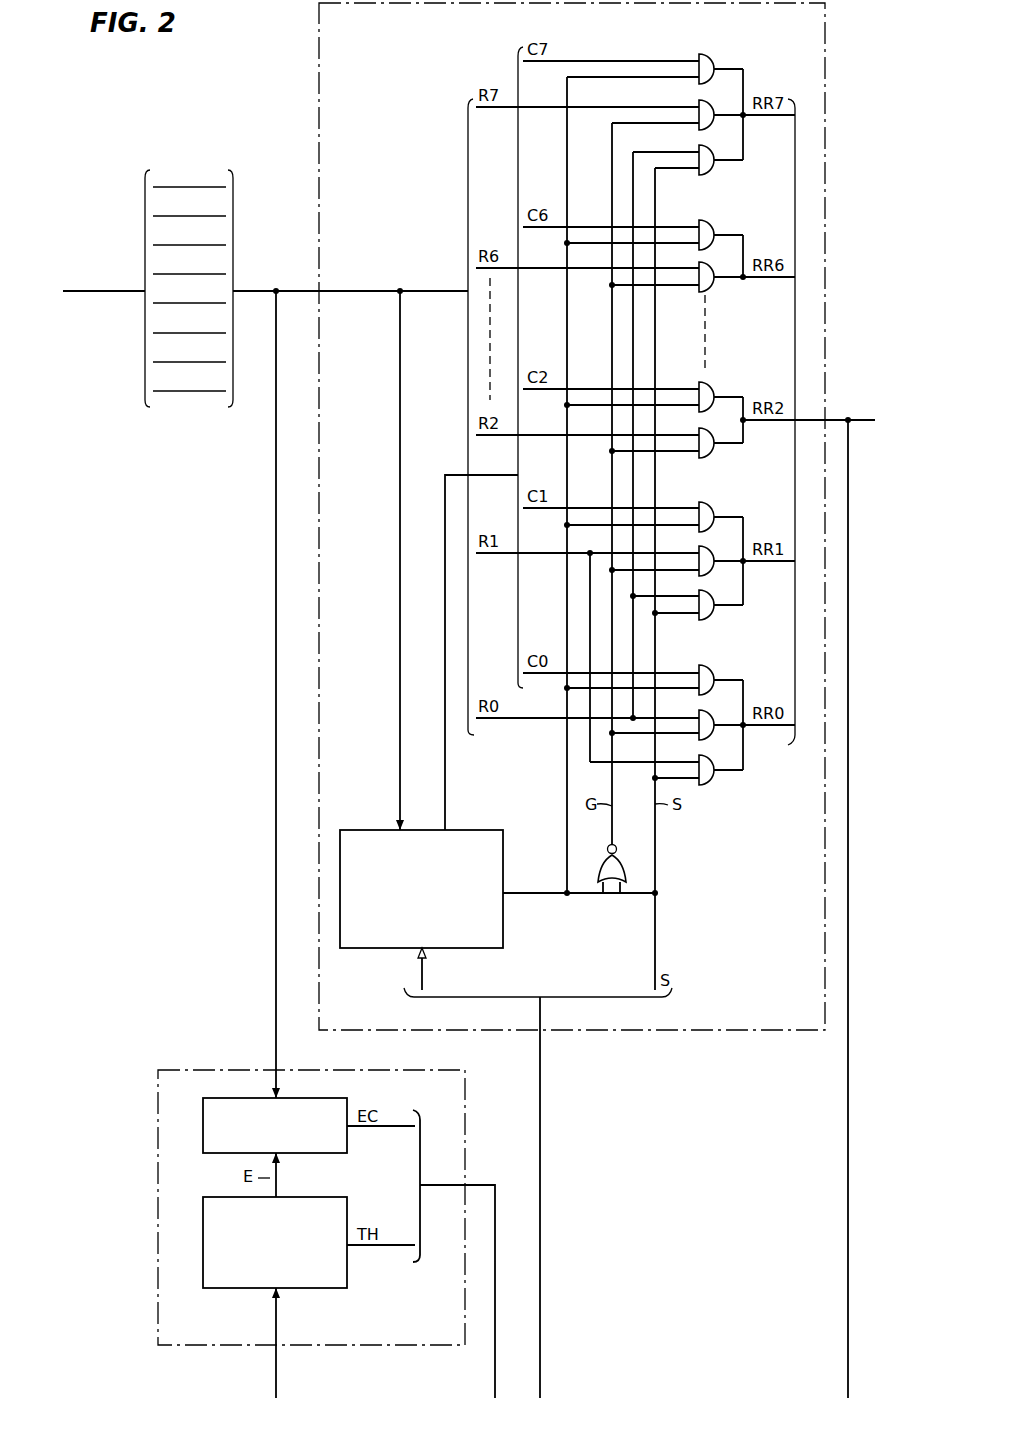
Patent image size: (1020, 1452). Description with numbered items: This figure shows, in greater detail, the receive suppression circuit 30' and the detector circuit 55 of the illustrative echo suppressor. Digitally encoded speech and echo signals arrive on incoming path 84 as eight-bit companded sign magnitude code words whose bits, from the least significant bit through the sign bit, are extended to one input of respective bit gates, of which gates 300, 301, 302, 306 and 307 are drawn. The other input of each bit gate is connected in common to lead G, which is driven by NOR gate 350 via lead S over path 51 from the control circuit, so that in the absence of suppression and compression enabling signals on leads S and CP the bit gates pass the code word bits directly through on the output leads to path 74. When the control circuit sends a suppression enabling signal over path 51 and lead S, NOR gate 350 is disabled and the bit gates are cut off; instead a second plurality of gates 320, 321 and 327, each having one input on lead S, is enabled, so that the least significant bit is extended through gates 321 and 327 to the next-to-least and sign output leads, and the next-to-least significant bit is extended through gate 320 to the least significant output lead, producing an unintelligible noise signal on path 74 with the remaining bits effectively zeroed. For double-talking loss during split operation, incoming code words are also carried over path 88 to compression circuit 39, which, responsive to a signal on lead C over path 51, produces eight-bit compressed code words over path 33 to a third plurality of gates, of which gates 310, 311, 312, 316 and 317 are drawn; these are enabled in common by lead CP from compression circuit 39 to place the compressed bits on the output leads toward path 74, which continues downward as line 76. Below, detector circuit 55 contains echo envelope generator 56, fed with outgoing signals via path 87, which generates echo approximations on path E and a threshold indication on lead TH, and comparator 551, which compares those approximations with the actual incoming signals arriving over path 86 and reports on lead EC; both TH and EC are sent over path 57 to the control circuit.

The receive suppression circuit 30' is at (546, 516).
The incoming path 84 is at (110, 291).
The path 86 is at (276, 676).
The path 88 is at (400, 549).
The path 33 is at (445, 776).
The compression circuit 39 is at (358, 948).
The gate 317 is at (702, 52).
The bit gate 307 is at (702, 100).
The gate 327 is at (702, 145).
The gate 316 is at (702, 220).
The bit gate 306 is at (702, 262).
The gate 312 is at (702, 382).
The bit gate 302 is at (702, 428).
The gate 311 is at (702, 502).
The bit gate 301 is at (702, 546).
The gate 321 is at (702, 590).
The gate 310 is at (702, 665).
The bit gate 300 is at (702, 710).
The gate 320 is at (702, 755).
The NOR gate 350 is at (615, 868).
The path 74 is at (862, 420).
The output line 76 is at (848, 1372).
The path 51 is at (541, 1371).
The detector circuit 55 is at (158, 1191).
The comparator 551 is at (211, 1152).
The echo envelope generator 56 is at (214, 1288).
The path 57 is at (495, 1371).
The path 87 is at (276, 1371).